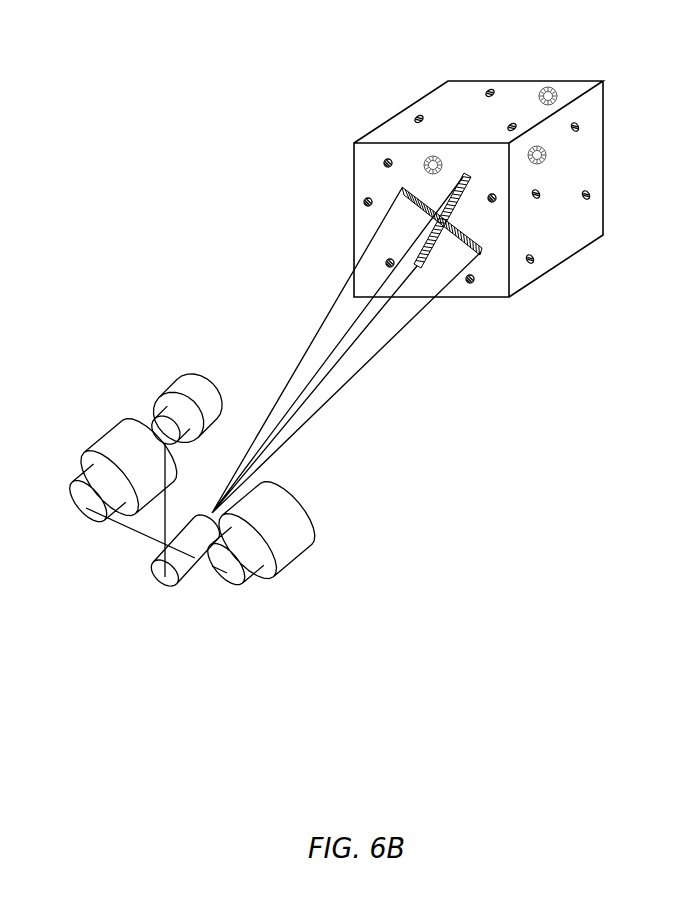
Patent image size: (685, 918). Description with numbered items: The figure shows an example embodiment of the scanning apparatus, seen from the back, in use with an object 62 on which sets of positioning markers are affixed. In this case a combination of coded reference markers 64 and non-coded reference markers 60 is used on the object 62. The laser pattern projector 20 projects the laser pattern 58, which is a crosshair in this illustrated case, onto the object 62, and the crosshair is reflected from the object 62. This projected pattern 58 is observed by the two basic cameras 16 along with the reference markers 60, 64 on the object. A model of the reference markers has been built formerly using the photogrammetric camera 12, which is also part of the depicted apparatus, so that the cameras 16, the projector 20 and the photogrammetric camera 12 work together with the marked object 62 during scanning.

The photogrammetric camera 12 is at (192, 377).
The basic cameras 16 is at (103, 434).
The laser pattern projector 20 is at (185, 580).
The projected laser pattern 58 is at (460, 170).
The non-coded reference markers 60 is at (421, 115).
The object 62 is at (555, 270).
The coded reference markers 64 is at (549, 92).